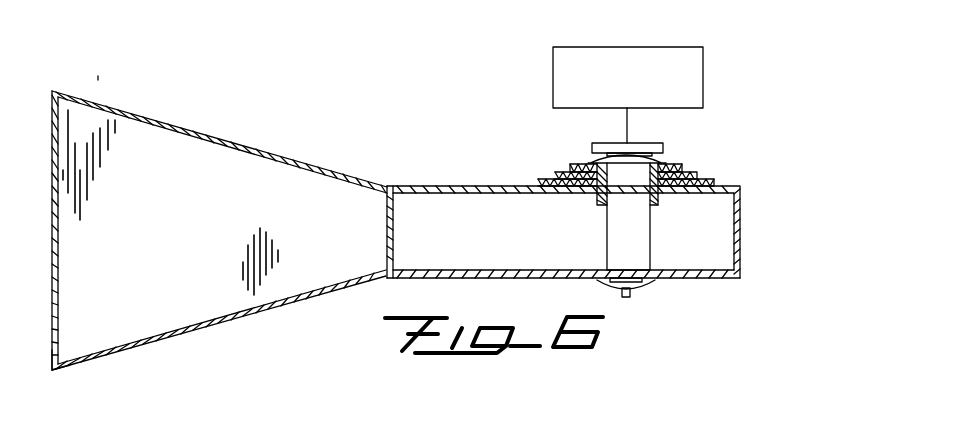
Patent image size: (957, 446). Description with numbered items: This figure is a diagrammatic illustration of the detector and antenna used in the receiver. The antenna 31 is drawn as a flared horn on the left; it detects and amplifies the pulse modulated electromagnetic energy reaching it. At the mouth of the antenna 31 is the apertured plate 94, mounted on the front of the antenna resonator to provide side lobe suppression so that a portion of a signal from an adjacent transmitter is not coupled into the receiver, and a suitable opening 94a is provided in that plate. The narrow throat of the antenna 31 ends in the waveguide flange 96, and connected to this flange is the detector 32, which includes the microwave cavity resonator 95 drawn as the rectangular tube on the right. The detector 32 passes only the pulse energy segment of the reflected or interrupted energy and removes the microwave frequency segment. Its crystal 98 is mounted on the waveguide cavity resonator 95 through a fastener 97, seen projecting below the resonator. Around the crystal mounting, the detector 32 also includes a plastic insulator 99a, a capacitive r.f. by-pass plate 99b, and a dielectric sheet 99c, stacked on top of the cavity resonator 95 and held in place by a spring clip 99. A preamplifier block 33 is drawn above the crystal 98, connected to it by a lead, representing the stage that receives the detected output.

The antenna 31 is at (229, 141).
The detector 32 is at (483, 186).
The preamplifier 33 is at (640, 48).
The apertured plate 94 is at (56, 370).
The opening 94a is at (57, 287).
The microwave cavity resonator 95 is at (510, 278).
The waveguide flange 96 is at (382, 273).
The fastener 97 is at (640, 283).
The crystal 98 is at (591, 147).
The spring clip 99 is at (663, 163).
The plastic insulator 99a is at (688, 164).
The capacitive r.f. by-pass plate 99b is at (699, 173).
The dielectric sheet 99c is at (715, 180).